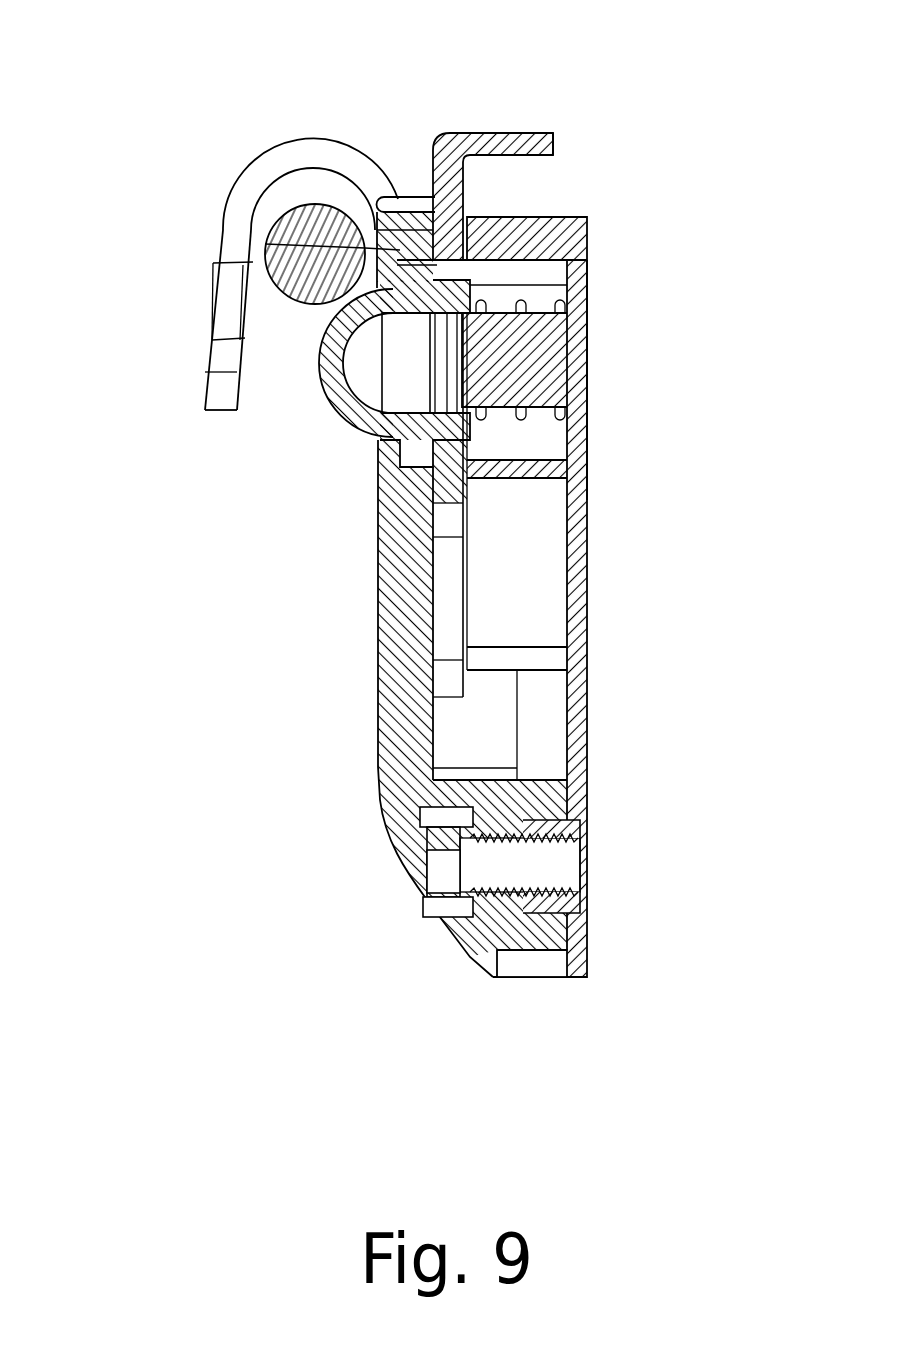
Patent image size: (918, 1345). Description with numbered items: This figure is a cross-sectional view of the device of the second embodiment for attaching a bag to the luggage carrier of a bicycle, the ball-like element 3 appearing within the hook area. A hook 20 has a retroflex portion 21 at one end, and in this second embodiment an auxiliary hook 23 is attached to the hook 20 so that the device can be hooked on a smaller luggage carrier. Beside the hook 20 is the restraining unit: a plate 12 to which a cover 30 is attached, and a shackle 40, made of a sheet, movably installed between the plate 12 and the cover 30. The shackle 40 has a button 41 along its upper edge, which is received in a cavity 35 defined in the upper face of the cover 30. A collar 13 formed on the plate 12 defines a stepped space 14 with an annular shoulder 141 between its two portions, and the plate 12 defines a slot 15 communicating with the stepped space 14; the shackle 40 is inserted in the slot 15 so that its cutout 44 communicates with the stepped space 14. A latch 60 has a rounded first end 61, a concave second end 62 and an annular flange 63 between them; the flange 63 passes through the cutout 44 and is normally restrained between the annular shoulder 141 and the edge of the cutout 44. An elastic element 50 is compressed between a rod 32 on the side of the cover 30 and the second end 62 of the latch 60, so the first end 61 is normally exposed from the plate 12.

The ball 3 is at (265, 244).
The plate 12 is at (397, 650).
The collar 13 is at (527, 272).
The stepped space 14 is at (380, 447).
The annular shoulder 141 is at (380, 477).
The slot 15 is at (265, 210).
The hook 20 is at (227, 372).
The retroflex portion 21 is at (312, 157).
The auxiliary hook 23 is at (290, 195).
The cover 30 is at (607, 597).
The rod 32 is at (593, 357).
The cavity 35 is at (552, 214).
The shackle 40 is at (442, 203).
The button 41 is at (540, 133).
The cutout 44 is at (213, 265).
The elastic element 50 is at (600, 415).
The latch 60 is at (330, 407).
The first end 61 is at (397, 370).
The second end 62 is at (575, 285).
The annular flange 63 is at (248, 308).